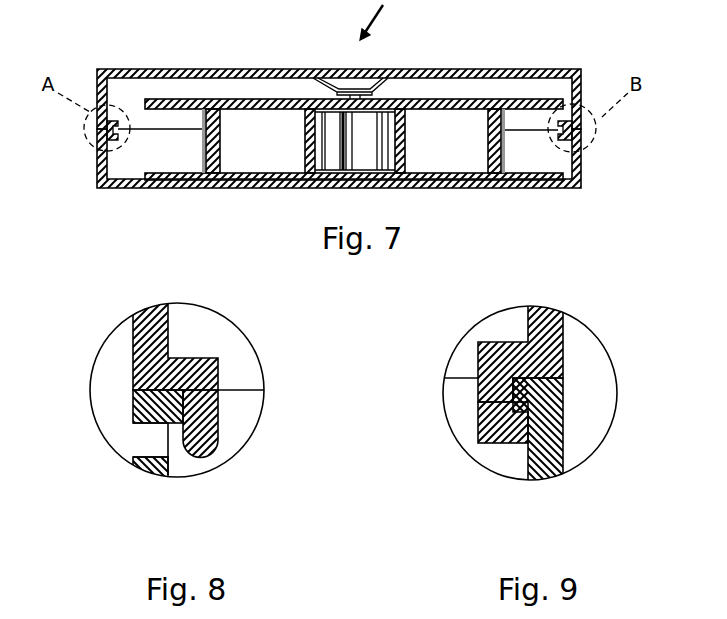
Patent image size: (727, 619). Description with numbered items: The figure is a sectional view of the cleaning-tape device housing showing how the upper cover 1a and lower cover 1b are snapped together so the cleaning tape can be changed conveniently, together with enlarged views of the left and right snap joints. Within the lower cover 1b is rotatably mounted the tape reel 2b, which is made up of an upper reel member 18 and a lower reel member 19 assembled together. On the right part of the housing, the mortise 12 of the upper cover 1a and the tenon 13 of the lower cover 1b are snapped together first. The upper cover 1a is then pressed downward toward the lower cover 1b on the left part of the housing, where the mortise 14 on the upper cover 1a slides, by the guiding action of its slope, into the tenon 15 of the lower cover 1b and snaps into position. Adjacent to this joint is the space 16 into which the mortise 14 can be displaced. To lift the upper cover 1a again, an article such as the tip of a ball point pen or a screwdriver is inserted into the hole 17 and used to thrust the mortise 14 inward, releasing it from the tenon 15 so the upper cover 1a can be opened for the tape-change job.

In FIG. 7, the upper cover 1a is at (491, 69).
In FIG. 8, the upper cover 1a is at (169, 335).
In FIG. 9, the upper cover 1a is at (529, 322).
In FIG. 7, the lower cover 1b is at (582, 178).
In FIG. 8, the lower cover 1b is at (153, 476).
In FIG. 9, the lower cover 1b is at (564, 420).
In FIG. 7, the tape reel 2b is at (221, 94).
In FIG. 9, the mortise 12 is at (477, 428).
In FIG. 9, the tenon 13 is at (510, 402).
In FIG. 8, the mortise 14 is at (218, 420).
In FIG. 8, the tenon 15 is at (140, 410).
In FIG. 8, the gap 16 is at (178, 448).
In FIG. 8, the hole 17 is at (138, 442).
In FIG. 7, the upper reel member 18 is at (418, 99).
In FIG. 7, the lower reel member 19 is at (454, 165).